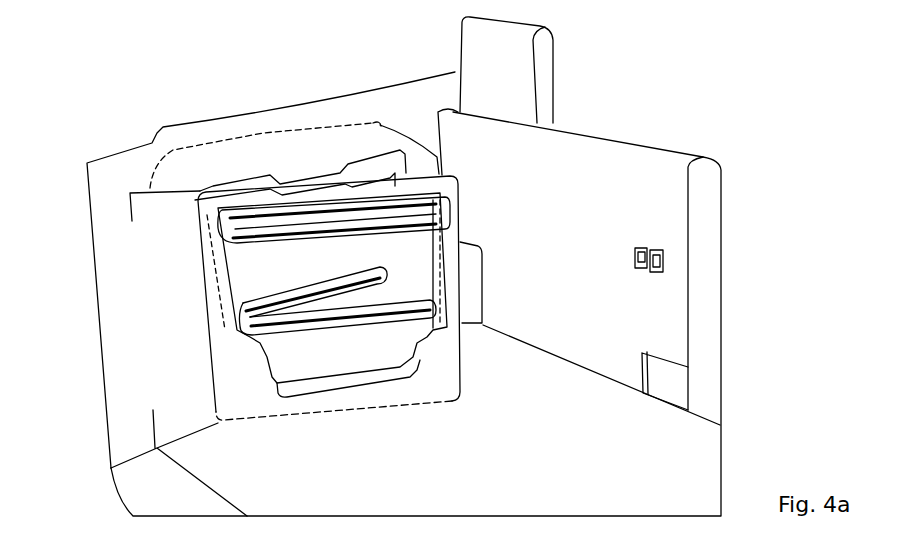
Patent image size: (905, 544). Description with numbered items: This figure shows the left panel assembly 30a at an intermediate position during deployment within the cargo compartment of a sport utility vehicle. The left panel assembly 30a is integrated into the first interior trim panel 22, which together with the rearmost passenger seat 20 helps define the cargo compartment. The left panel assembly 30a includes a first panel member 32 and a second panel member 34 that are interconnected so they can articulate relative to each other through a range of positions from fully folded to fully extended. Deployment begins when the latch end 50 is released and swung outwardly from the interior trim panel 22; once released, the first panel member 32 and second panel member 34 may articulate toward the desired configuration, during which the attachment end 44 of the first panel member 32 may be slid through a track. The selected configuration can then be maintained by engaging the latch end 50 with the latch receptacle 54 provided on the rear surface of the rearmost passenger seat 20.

The rearmost passenger seat 20 is at (643, 173).
The first interior trim panel 22 is at (264, 160).
The left panel assembly 30a is at (160, 233).
The first panel member 32 is at (377, 163).
The second panel member 34 is at (450, 333).
The attachment end 44 is at (413, 160).
The latch end 50 is at (460, 220).
The latch receptacle 54 is at (639, 264).